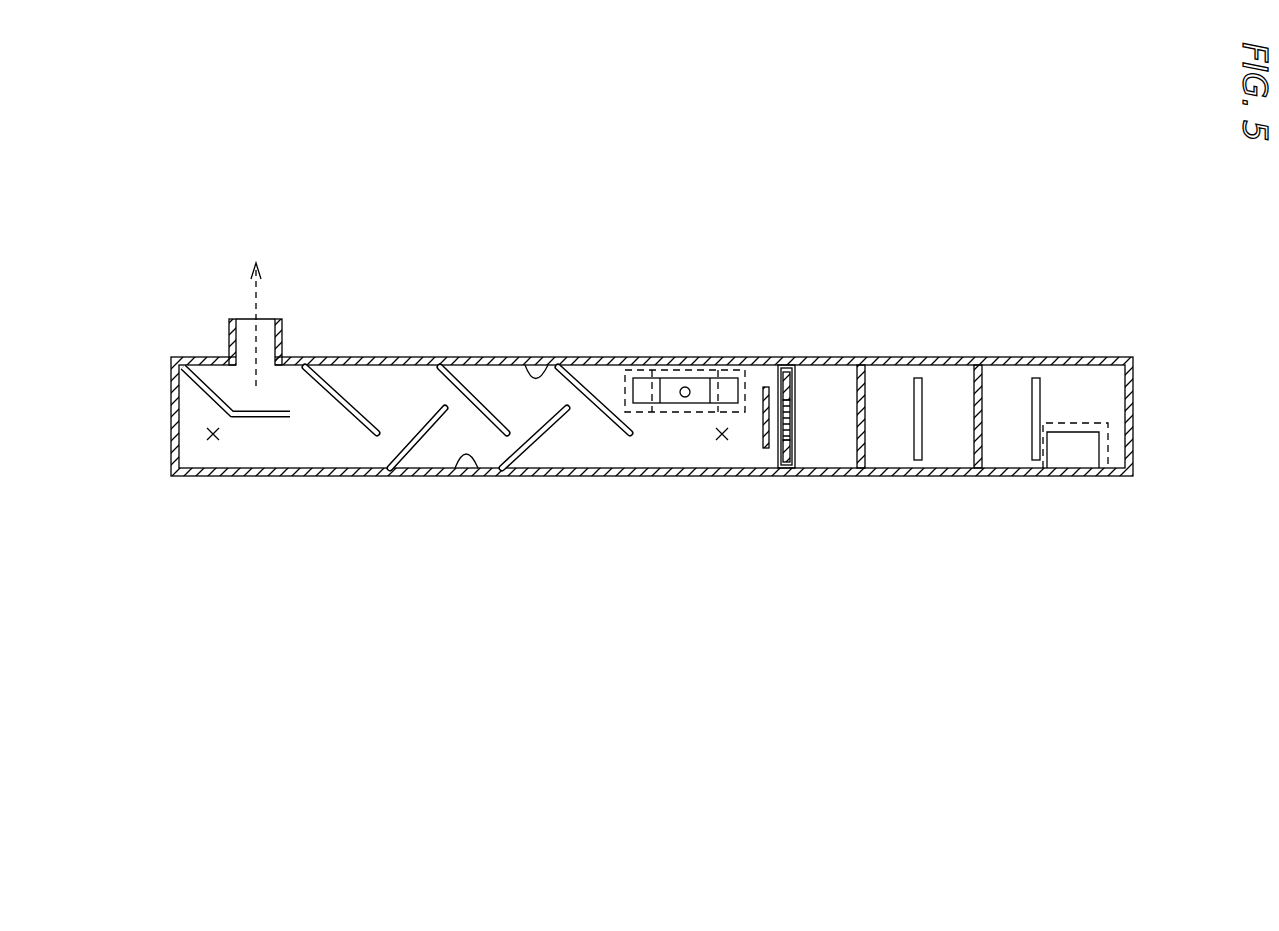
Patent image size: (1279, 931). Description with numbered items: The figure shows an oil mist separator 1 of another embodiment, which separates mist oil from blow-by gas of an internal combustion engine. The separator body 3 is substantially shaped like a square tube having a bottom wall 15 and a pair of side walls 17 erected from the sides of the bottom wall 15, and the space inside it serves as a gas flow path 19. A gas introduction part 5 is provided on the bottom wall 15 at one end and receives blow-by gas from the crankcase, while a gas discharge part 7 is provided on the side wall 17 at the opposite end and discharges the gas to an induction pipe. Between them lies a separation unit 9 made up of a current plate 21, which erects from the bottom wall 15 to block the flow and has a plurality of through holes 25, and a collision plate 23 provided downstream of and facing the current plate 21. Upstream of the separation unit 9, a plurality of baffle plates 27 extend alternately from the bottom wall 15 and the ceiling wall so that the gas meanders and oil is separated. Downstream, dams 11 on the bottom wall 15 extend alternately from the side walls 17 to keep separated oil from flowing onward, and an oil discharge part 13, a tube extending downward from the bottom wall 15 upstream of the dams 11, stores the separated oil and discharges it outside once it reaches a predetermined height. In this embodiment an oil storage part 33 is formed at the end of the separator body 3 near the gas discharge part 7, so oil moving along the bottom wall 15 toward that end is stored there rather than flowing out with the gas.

The oil mist separator 1 is at (1087, 173).
The separator body 3 is at (750, 365).
The gas introduction part 5 is at (1072, 453).
The gas discharge part 7 is at (245, 328).
The separation unit 9 is at (834, 483).
The dams 11 is at (352, 393).
The oil discharge part 13 is at (683, 383).
The bottom wall 15 is at (700, 445).
The side walls 17 is at (537, 366).
The gas flow path 19 is at (722, 430).
The current plate 21 is at (790, 445).
The collision plate 23 is at (768, 450).
The through holes 25 is at (800, 398).
The baffle plates 27 is at (855, 405).
The oil storage part 33 is at (215, 440).